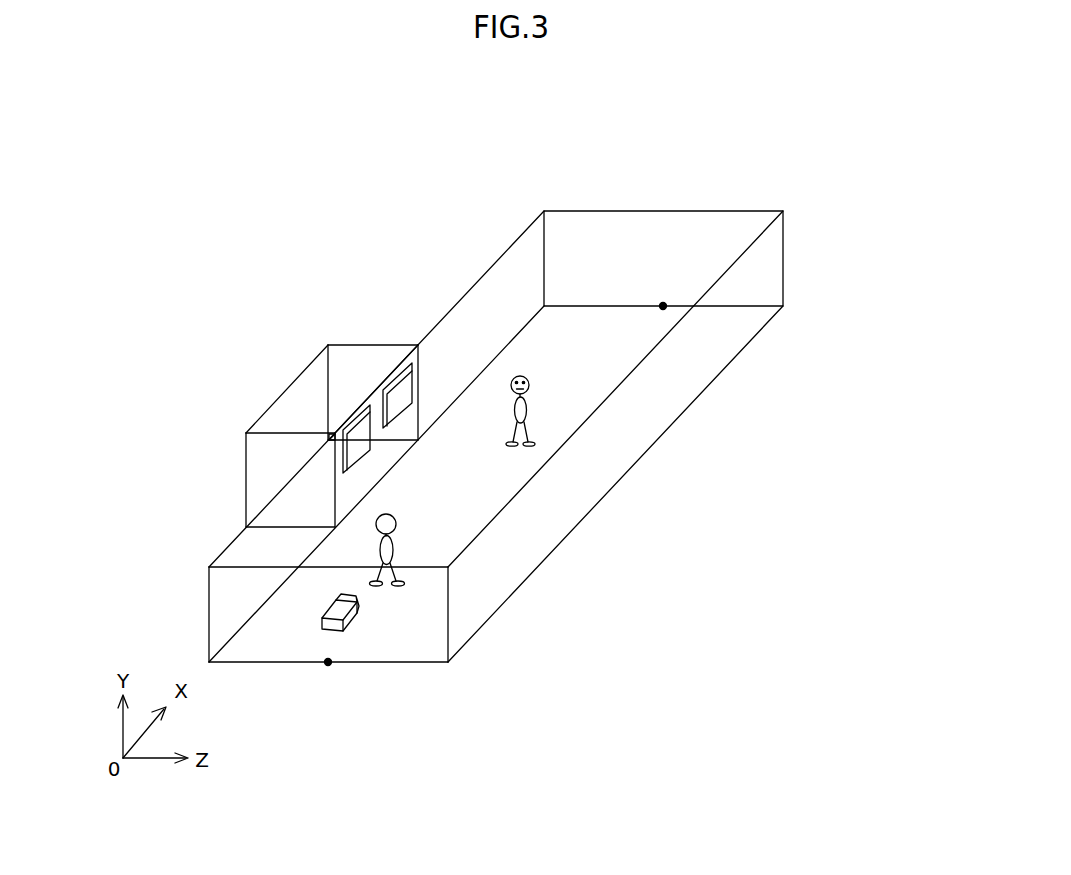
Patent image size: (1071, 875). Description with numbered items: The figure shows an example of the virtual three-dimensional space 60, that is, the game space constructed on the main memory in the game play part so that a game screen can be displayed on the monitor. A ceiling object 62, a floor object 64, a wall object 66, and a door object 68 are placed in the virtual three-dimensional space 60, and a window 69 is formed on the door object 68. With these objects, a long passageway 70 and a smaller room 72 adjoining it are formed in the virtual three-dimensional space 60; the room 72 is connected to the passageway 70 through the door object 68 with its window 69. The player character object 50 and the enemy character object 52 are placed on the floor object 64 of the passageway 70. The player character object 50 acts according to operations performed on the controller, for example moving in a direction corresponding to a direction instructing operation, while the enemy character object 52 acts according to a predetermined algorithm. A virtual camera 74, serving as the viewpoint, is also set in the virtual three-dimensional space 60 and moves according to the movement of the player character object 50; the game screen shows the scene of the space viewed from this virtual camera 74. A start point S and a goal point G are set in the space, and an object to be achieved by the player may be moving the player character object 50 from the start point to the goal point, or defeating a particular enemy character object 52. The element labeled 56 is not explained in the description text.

The virtual three-dimensional space 60 is at (229, 193).
The passageway 70 is at (687, 165).
The room 72 is at (355, 320).
The ceiling object 62 is at (733, 211).
The floor object 64 is at (277, 532).
The wall object 66 is at (246, 458).
The goal wall 56 is at (545, 257).
The door object 68 is at (413, 410).
The window 69 is at (403, 380).
The player character object 50 is at (396, 541).
The enemy character object 52 is at (532, 378).
The virtual camera 74 is at (353, 623).